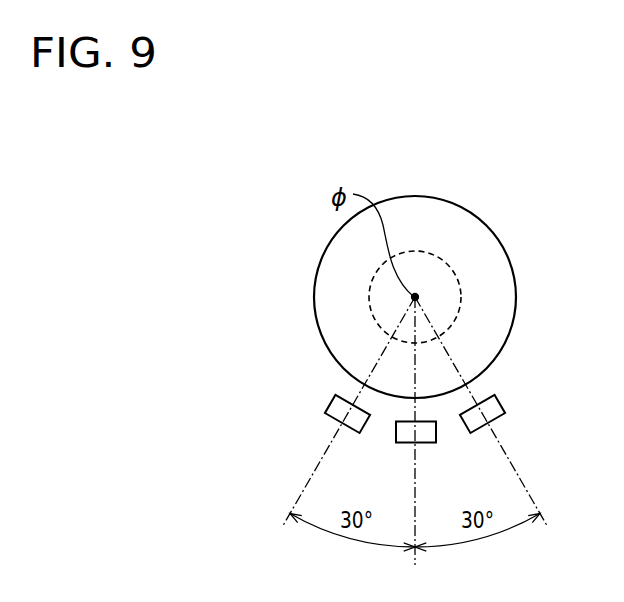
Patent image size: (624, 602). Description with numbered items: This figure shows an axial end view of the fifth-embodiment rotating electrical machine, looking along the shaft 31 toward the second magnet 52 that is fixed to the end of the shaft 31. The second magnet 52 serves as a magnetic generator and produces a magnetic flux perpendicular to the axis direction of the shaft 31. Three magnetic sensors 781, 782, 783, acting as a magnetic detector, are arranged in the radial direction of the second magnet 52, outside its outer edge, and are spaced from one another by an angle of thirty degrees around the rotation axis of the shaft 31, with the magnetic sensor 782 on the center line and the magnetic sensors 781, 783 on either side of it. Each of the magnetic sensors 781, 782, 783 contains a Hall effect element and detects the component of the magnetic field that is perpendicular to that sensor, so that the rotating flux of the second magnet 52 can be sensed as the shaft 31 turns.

The second magnet 52 is at (488, 225).
The shaft 31 is at (461, 276).
The magnetic sensor 781 is at (503, 405).
The magnetic sensor 782 is at (406, 443).
The magnetic sensor 783 is at (328, 407).